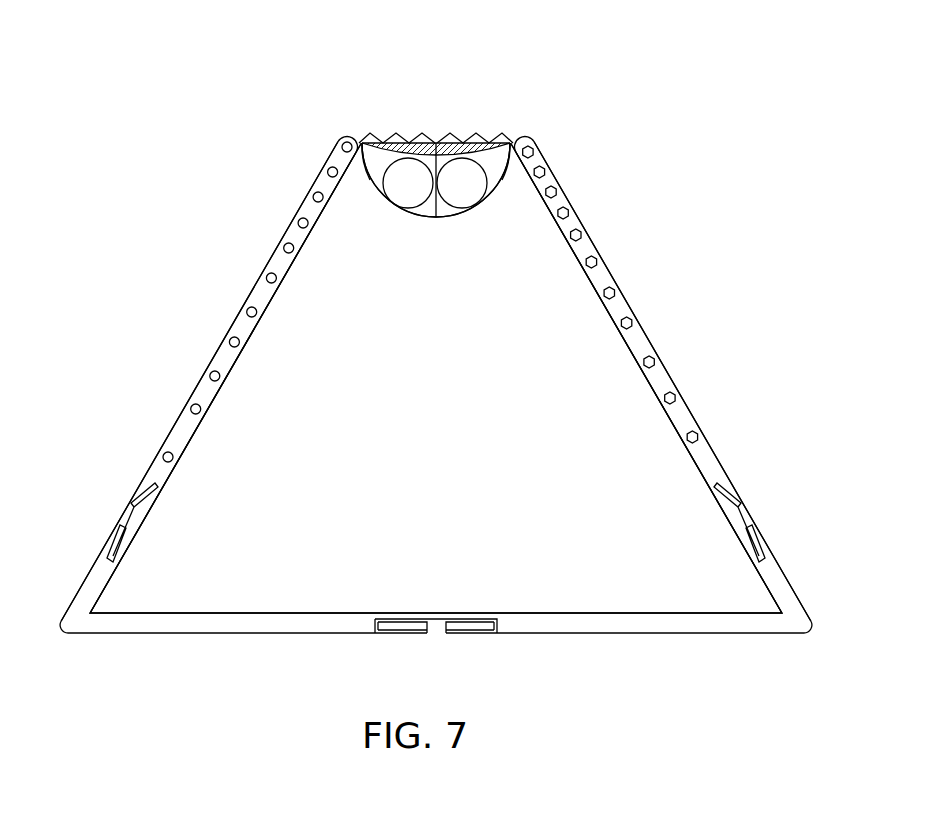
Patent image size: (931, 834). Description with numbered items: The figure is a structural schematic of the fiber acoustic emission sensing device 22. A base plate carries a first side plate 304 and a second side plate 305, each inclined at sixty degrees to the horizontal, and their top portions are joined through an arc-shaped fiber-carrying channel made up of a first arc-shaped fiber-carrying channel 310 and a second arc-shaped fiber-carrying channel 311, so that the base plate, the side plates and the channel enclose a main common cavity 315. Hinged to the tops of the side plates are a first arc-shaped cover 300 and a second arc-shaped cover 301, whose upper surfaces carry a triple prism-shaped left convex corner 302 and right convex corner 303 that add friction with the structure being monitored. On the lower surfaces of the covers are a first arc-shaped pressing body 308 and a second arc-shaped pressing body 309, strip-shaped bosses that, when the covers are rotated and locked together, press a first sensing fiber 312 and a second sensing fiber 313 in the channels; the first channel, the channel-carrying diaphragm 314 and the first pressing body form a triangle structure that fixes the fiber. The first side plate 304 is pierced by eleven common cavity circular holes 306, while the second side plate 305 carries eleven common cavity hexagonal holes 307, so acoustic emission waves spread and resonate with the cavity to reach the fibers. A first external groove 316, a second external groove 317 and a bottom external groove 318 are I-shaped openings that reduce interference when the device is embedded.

The fiber acoustic emission sensing device 22 is at (231, 55).
The first arc-shaped cover 300 is at (363, 143).
The second arc-shaped cover 301 is at (503, 143).
The left convex corner 302 is at (422, 132).
The right convex corner 303 is at (502, 134).
The first side plate 304 is at (335, 150).
The second side plate 305 is at (540, 157).
The common cavity circular holes 306 is at (273, 277).
The common cavity hexagonal holes 307 is at (612, 290).
The first arc-shaped pressing body 308 is at (362, 196).
The second arc-shaped pressing body 309 is at (493, 187).
The first arc-shaped fiber-carrying channel 310 is at (415, 217).
The second arc-shaped fiber-carrying channel 311 is at (462, 217).
The first sensing fiber 312 is at (424, 217).
The second sensing fiber 313 is at (440, 217).
The channel-carrying diaphragm 314 is at (433, 214).
The main common cavity 315 is at (335, 440).
The first external groove 316 is at (128, 513).
The second external groove 317 is at (742, 518).
The bottom external groove 318 is at (438, 622).